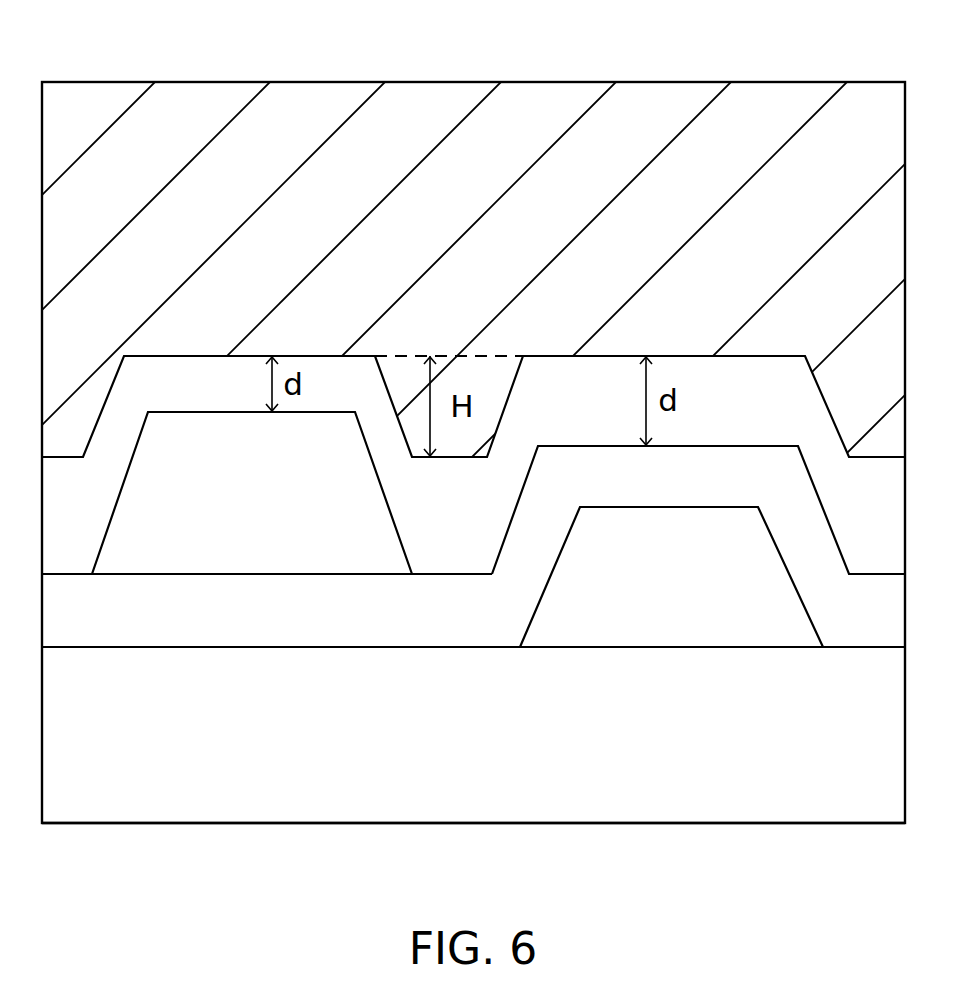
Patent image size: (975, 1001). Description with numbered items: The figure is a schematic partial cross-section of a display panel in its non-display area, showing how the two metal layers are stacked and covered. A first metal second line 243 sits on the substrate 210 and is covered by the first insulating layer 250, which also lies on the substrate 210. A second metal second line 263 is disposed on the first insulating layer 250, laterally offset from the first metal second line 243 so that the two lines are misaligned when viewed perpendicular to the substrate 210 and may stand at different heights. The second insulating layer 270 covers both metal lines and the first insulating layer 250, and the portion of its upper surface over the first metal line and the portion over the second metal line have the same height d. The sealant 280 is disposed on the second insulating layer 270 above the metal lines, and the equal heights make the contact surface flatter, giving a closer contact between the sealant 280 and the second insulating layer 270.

The substrate 210 is at (127, 785).
The first metal second lines 243 is at (348, 537).
The first insulating layer 250 is at (637, 479).
The second metal second lines 263 is at (766, 602).
The second insulating layer 270 is at (476, 499).
The sealant 280 is at (100, 170).